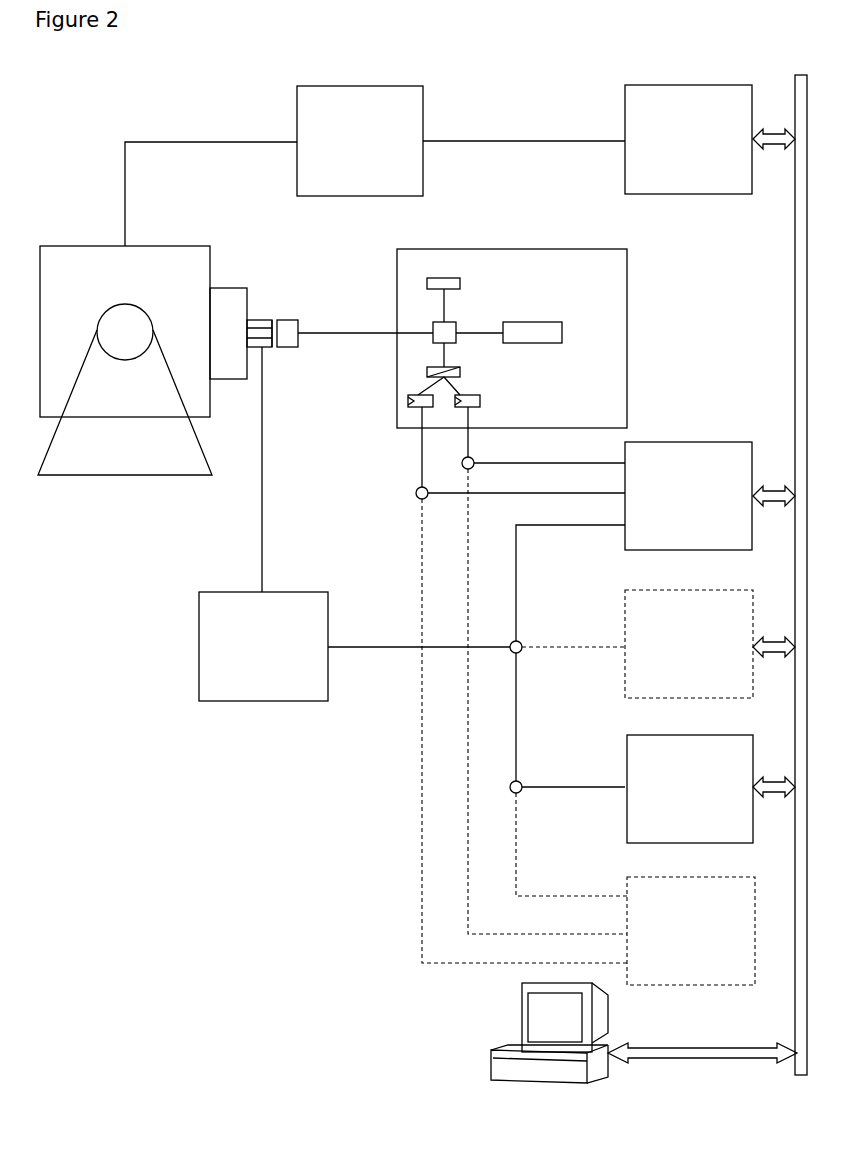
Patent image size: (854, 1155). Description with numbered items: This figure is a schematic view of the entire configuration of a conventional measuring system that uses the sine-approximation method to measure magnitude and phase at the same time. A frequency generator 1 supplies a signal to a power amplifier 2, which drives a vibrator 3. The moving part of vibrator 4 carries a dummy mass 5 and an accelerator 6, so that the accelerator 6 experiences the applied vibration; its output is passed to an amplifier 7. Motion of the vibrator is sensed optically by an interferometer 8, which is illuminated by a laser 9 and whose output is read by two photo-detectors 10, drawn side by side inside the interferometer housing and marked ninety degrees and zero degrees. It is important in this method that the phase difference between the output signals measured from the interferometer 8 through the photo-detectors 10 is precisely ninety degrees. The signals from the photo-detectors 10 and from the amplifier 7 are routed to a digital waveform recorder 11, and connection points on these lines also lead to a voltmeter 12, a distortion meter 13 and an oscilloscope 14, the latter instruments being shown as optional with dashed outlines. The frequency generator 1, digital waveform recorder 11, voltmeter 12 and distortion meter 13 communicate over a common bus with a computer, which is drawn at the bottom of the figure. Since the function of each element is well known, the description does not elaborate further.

The frequency generator 1 is at (710, 139).
The power amplifier 2 is at (360, 141).
The vibrator 3 is at (125, 360).
The moving part of vibrator 4 is at (227, 307).
The dummy mass 5 is at (288, 325).
The accelerator 6 is at (262, 335).
The amplifier 7 is at (263, 646).
The interferometer 8 is at (512, 322).
The laser 9 is at (532, 315).
The photo-detector 10 is at (467, 408).
The digital waveform recorder 11 is at (710, 496).
The voltmeter 12 is at (710, 644).
The distortion meter 13 is at (711, 789).
The oscilloscope 14 is at (691, 931).